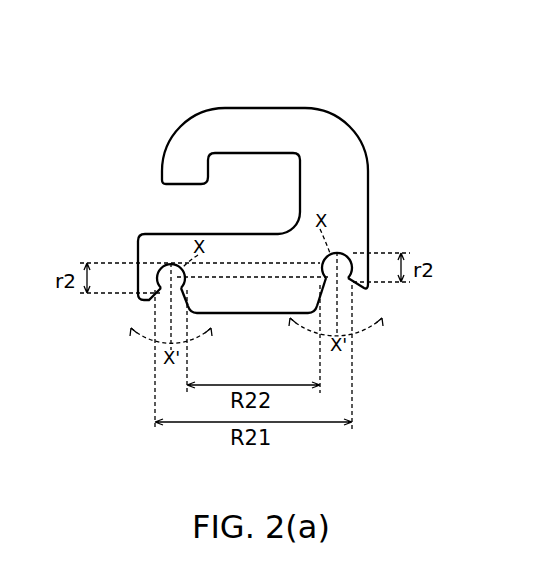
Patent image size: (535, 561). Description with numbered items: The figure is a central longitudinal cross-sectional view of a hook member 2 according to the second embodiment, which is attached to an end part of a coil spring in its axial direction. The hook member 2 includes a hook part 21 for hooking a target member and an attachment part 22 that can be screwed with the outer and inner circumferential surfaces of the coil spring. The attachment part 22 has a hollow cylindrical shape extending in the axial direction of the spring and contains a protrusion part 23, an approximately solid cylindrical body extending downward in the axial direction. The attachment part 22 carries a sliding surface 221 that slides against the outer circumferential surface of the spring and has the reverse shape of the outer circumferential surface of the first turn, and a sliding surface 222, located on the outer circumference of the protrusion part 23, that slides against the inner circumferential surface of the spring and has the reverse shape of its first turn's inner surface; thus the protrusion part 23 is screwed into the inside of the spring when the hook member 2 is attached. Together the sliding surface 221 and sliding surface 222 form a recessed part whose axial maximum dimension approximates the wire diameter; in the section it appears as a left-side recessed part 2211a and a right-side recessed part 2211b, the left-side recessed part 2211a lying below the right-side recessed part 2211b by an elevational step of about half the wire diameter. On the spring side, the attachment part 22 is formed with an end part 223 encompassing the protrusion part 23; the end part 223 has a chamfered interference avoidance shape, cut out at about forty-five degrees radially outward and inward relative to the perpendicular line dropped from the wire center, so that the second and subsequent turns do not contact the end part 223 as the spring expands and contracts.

The hook member 2 is at (414, 106).
The hook part 21 is at (183, 154).
The attachment part 22 is at (230, 252).
The protrusion part 23 is at (258, 313).
The sliding surface 221 is at (150, 282).
The left-side recessed part 2211a is at (153, 278).
The right-side recessed part 2211b is at (354, 264).
The sliding surface 222 is at (317, 272).
The end part 223 is at (148, 316).